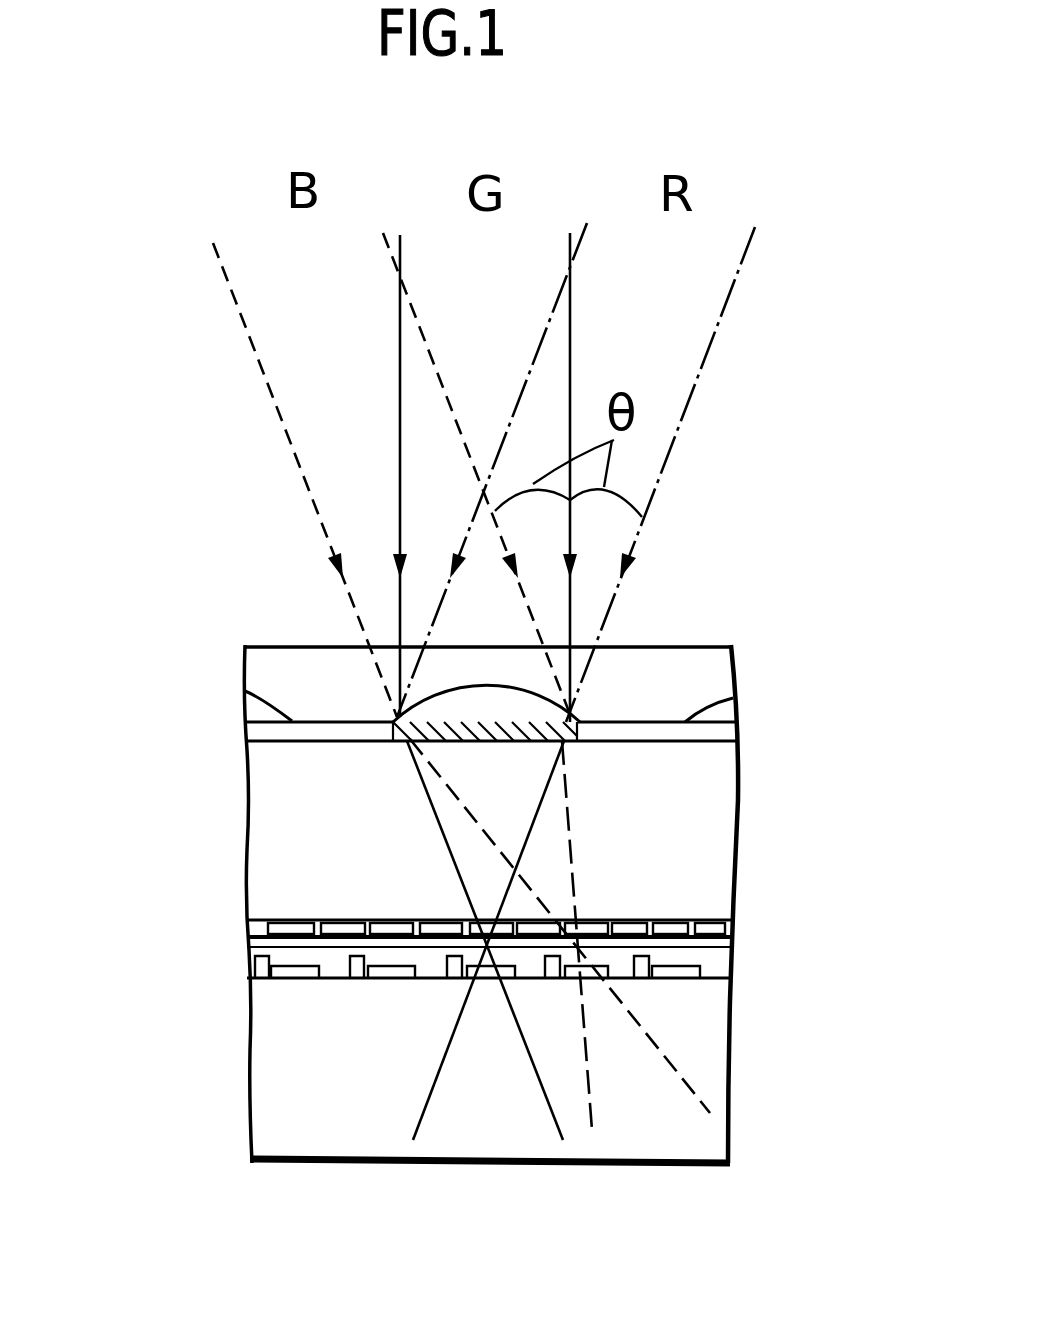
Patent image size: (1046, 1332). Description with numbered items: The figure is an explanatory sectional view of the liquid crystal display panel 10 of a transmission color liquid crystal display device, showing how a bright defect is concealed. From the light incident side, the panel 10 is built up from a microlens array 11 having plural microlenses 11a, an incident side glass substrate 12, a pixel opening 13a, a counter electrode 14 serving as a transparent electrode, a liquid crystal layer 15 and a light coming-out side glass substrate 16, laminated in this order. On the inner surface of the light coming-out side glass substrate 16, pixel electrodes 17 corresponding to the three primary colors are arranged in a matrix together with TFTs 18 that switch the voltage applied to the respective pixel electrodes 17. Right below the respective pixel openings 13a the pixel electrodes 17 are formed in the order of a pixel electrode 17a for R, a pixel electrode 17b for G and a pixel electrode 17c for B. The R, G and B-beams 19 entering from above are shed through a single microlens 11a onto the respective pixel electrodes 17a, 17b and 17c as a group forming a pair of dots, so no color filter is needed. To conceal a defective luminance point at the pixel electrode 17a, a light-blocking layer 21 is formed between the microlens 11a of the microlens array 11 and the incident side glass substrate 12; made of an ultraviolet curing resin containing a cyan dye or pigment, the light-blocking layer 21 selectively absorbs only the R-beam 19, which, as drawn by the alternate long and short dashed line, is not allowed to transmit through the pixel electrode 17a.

The liquid crystal display panel 10 is at (805, 636).
The microlens array 11 is at (258, 659).
The microlens 11a is at (523, 709).
The incident side glass substrate 12 is at (265, 758).
The pixel opening 13a is at (381, 931).
The counter electrode 14 is at (255, 940).
The liquid crystal layer 15 is at (290, 977).
The light coming-out side glass substrate 16 is at (268, 1090).
The pixel electrodes 17 is at (668, 962).
The pixel electrode corresponding to R 17a is at (375, 980).
The pixel electrode corresponding to G 17b is at (493, 980).
The pixel electrode corresponding to B 17c is at (593, 980).
The TFT 18 is at (350, 978).
The R, G and B-beams 19 is at (748, 260).
The light-blocking layer 21 is at (517, 743).